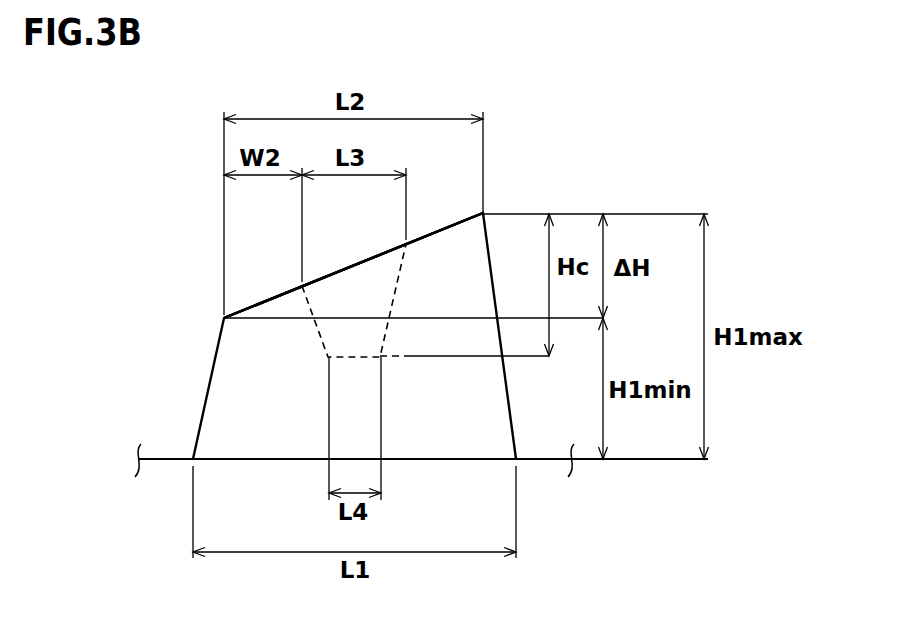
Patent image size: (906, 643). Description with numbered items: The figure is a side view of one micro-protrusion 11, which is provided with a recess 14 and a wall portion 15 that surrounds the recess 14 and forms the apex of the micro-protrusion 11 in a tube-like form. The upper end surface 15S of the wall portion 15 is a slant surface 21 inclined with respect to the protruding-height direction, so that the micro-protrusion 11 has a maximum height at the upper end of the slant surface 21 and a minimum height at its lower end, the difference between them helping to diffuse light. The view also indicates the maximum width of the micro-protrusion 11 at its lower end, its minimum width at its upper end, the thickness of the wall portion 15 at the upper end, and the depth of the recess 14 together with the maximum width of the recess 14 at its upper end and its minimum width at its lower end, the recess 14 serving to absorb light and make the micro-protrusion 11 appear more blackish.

The micro-protrusion 11 is at (525, 202).
The recess 14 is at (312, 307).
The wall portion 15 is at (423, 237).
The upper end surface 15S is at (452, 227).
The slant surface 21 is at (353, 265).